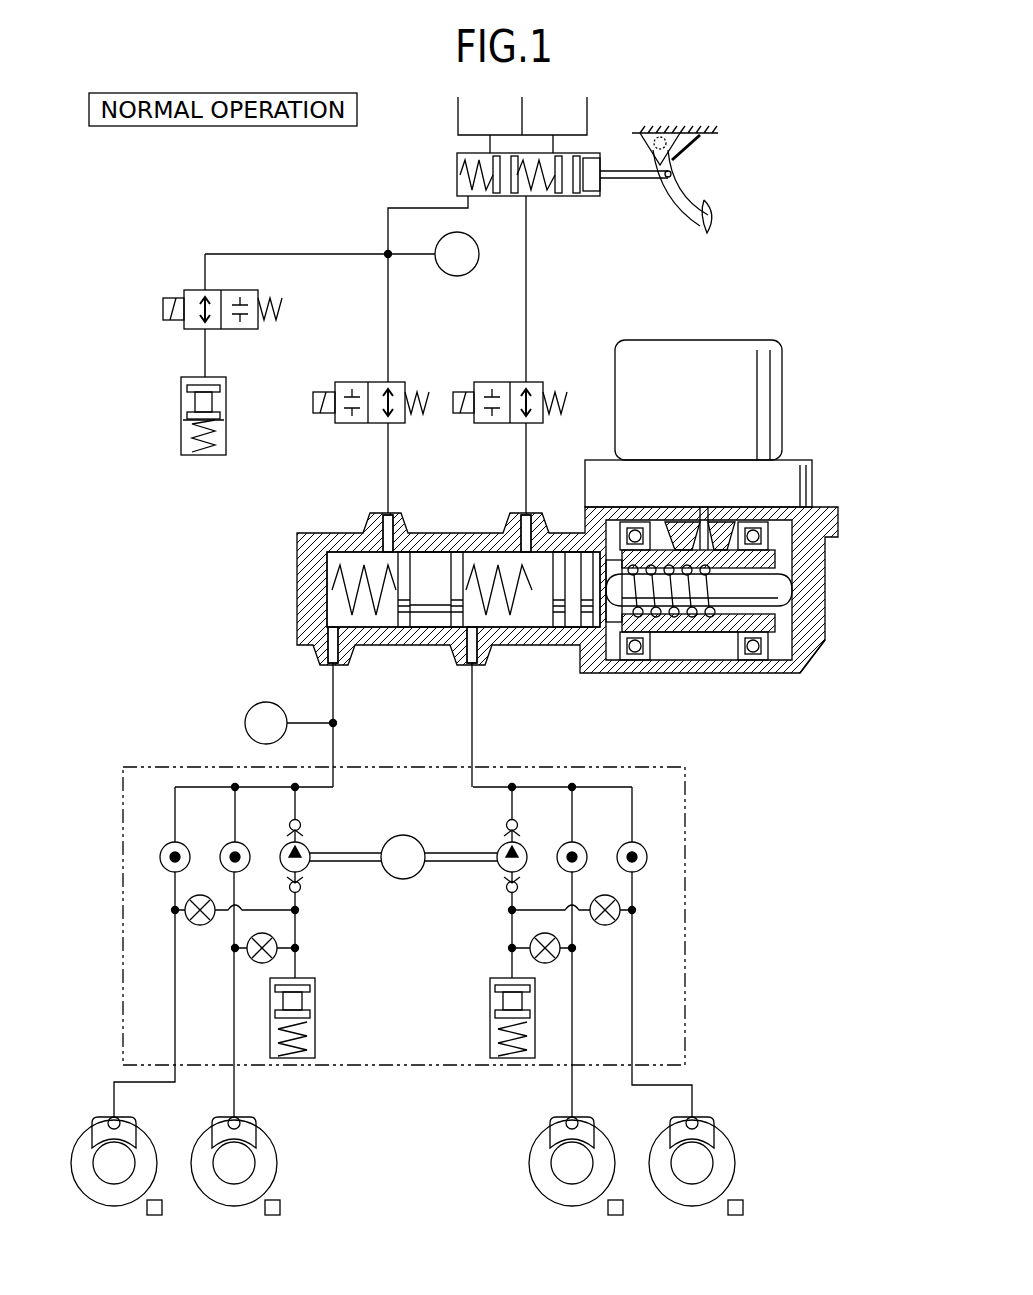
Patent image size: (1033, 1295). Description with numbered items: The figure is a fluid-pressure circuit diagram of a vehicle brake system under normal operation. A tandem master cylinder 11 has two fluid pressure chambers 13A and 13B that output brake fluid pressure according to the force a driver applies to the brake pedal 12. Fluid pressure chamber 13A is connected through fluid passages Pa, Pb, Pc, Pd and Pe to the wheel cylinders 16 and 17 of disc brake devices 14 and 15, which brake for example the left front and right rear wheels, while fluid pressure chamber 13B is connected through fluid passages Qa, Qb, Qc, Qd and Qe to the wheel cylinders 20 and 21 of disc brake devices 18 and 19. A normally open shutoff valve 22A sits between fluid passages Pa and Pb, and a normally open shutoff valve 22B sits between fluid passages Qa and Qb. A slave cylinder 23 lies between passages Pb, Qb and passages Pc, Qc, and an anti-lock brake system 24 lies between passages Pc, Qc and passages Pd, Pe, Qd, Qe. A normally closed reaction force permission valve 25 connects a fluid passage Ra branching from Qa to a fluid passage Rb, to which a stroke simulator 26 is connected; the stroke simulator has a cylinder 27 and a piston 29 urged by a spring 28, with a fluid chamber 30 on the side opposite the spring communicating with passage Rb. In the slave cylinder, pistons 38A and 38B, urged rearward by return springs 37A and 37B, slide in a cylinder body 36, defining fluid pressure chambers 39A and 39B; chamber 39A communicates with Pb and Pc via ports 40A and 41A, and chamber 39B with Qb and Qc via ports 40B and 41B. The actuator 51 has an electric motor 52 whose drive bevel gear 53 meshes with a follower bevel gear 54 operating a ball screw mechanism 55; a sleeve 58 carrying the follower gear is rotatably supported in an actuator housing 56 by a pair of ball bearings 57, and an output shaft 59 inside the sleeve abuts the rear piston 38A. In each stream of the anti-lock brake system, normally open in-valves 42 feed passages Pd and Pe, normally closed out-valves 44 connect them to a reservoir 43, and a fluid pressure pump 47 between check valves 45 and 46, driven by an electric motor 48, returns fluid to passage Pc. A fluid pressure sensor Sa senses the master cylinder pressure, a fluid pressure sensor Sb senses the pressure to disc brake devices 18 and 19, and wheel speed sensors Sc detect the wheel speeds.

The tandem master cylinder 11 is at (447, 170).
The brake pedal 12 is at (715, 224).
The fluid pressure chamber 13A is at (548, 196).
The fluid pressure chamber 13B is at (478, 198).
The disc brake device 14 is at (527, 1150).
The disc brake device 15 is at (740, 1150).
The wheel cylinder 16 is at (563, 1122).
The wheel cylinder 17 is at (705, 1122).
The disc brake device 18 is at (281, 1150).
The disc brake device 19 is at (66, 1140).
The wheel cylinder 20 is at (240, 1122).
The wheel cylinder 21 is at (100, 1122).
The shutoff valve 22A is at (535, 377).
The shutoff valve 22B is at (396, 377).
The slave cylinder 23 is at (303, 527).
The anti-lock brake system 24 is at (555, 768).
The reaction force permission valve 25 is at (186, 287).
The stroke simulator 26 is at (232, 400).
The cylinder 27 is at (228, 436).
The spring 28 is at (218, 455).
The piston 29 is at (195, 400).
The fluid chamber 30 is at (217, 380).
The cylinder body 36 is at (463, 560).
The return spring 37A is at (512, 605).
The return spring 37B is at (372, 605).
The piston 38A is at (572, 570).
The piston 38B is at (432, 570).
The fluid pressure chamber 39A is at (486, 565).
The fluid pressure chamber 39B is at (352, 565).
The port 40A is at (529, 520).
The port 40B is at (391, 520).
The port 41A is at (470, 672).
The port 41B is at (333, 668).
The in-valve 42 is at (170, 850).
The reservoir 43 is at (318, 1020).
The out-valve 44 is at (204, 926).
The check valve 45 is at (303, 891).
The check valve 46 is at (300, 820).
The fluid pressure pump 47 is at (304, 846).
The electric motor 48 is at (408, 880).
The actuator 51 is at (728, 642).
The electric motor 52 is at (765, 428).
The drive bevel gear 53 is at (716, 534).
The follower bevel gear 54 is at (716, 648).
The ball screw mechanism 55 is at (651, 620).
The actuator housing 56 is at (796, 670).
The ball bearing 57 is at (641, 531).
The sleeve 58 is at (615, 632).
The output shaft 59 is at (765, 590).
The fluid passage Ra is at (292, 253).
The fluid passage Rb is at (204, 358).
The fluid passage Qa is at (387, 340).
The fluid passage Qb is at (389, 456).
The fluid passage Qc is at (340, 697).
The fluid passage Qd is at (236, 1068).
The fluid passage Qe is at (177, 1068).
The fluid passage Pa is at (527, 306).
The fluid passage Pb is at (527, 463).
The fluid passage Pc is at (473, 707).
The fluid passage Pd is at (570, 1068).
The fluid passage Pe is at (630, 1068).
The fluid pressure sensor Sa is at (457, 262).
The fluid pressure sensor Sb is at (245, 722).
The vehicle wheel speed sensor Sc is at (162, 1207).